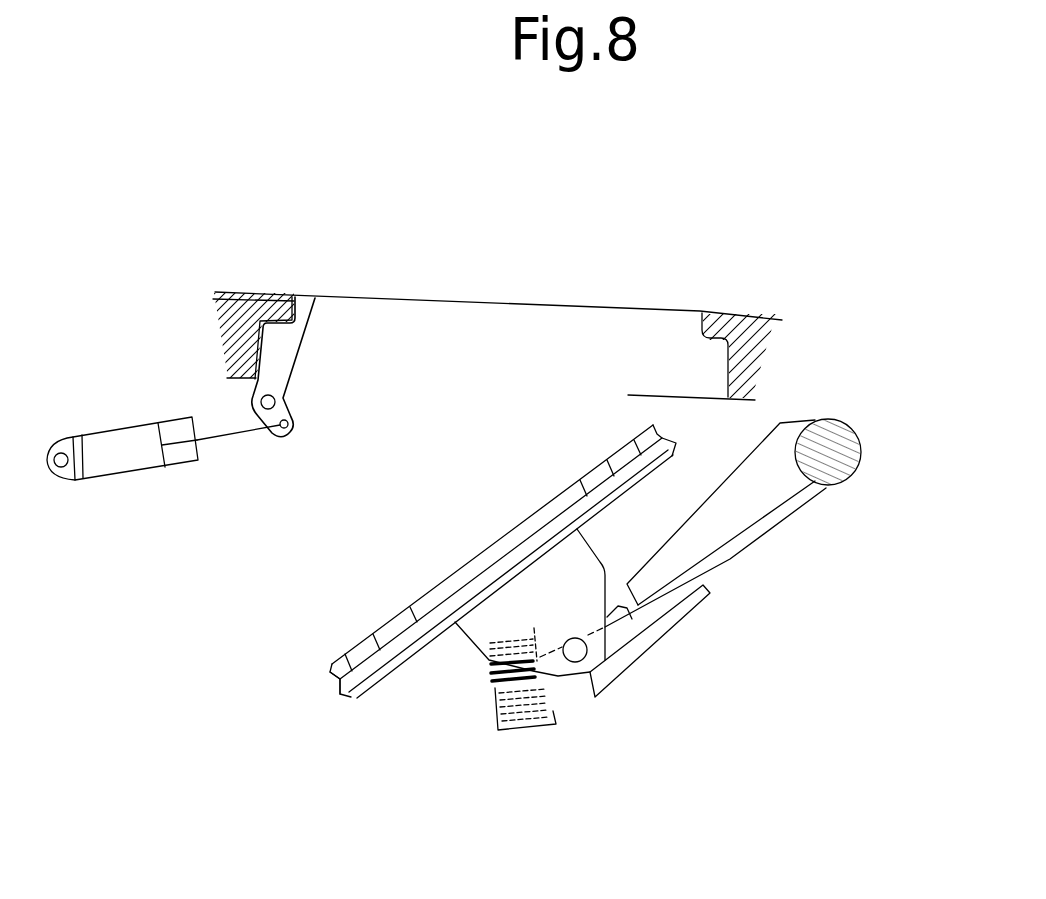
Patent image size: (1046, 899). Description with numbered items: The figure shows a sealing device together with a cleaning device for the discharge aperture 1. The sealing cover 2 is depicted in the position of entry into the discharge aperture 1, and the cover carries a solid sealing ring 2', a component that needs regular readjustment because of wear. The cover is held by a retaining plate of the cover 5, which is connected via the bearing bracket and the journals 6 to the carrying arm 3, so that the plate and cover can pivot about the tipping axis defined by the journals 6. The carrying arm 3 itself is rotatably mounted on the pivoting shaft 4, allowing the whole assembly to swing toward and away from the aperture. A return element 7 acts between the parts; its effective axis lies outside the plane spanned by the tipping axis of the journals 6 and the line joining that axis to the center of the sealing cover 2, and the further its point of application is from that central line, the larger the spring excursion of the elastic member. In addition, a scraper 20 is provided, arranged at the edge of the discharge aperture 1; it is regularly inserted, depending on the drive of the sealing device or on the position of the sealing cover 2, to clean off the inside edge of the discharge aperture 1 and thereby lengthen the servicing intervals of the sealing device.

The discharge aperture 1 is at (407, 312).
The scraper 20 is at (290, 342).
The sealing cover 2 is at (496, 561).
The solid sealing ring 2' is at (309, 702).
The retaining plate of the cover 5 is at (467, 622).
The carrying arm 3 is at (737, 556).
The pivoting shaft 4 is at (826, 474).
The journals 6 is at (577, 662).
The return element 7 is at (497, 688).